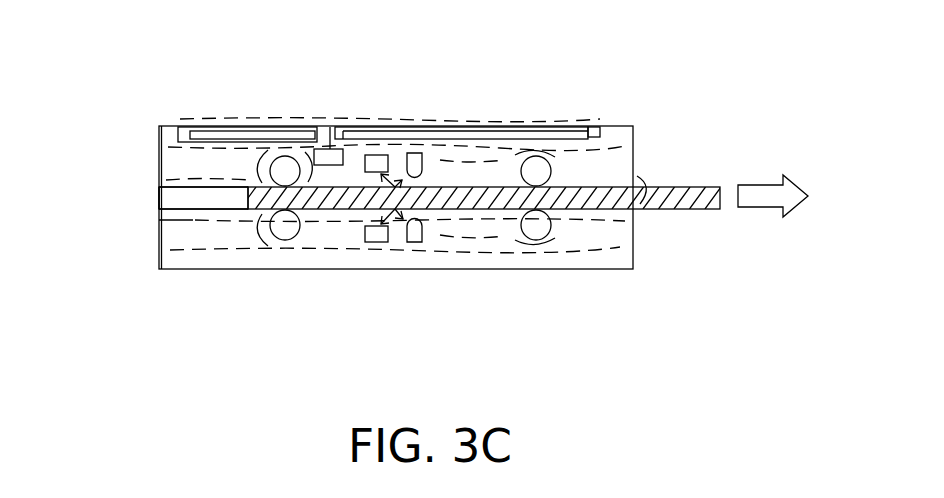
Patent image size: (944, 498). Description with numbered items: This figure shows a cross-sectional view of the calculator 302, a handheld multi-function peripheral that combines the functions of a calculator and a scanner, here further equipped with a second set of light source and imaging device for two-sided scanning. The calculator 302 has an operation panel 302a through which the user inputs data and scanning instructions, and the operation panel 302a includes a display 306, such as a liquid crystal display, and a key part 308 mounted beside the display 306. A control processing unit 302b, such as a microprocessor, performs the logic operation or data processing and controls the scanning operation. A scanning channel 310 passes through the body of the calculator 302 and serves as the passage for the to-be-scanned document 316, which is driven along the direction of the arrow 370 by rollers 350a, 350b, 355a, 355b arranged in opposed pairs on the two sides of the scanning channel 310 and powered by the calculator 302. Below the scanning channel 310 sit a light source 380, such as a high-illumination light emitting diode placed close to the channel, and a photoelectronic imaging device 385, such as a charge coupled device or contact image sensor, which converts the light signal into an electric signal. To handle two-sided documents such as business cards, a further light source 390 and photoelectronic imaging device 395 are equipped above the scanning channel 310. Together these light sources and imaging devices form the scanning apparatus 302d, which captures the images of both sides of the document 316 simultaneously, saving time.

The calculator 302 is at (634, 164).
The operation panel 302a is at (194, 122).
The control processing unit 302b is at (330, 142).
The scanning apparatus 302d is at (149, 206).
The display 306 is at (205, 137).
The key part 308 is at (372, 127).
The scanning channel 310 is at (198, 199).
The to-be-scanned document 316 is at (272, 191).
The roller 350a is at (286, 226).
The roller 350b is at (285, 171).
The roller 355a is at (537, 225).
The roller 355b is at (537, 170).
The arrow 370 is at (758, 196).
The light source 380 is at (417, 240).
The photoelectronic imaging device 385 is at (374, 238).
The light source 390 is at (420, 164).
The photoelectronic imaging device 395 is at (372, 156).